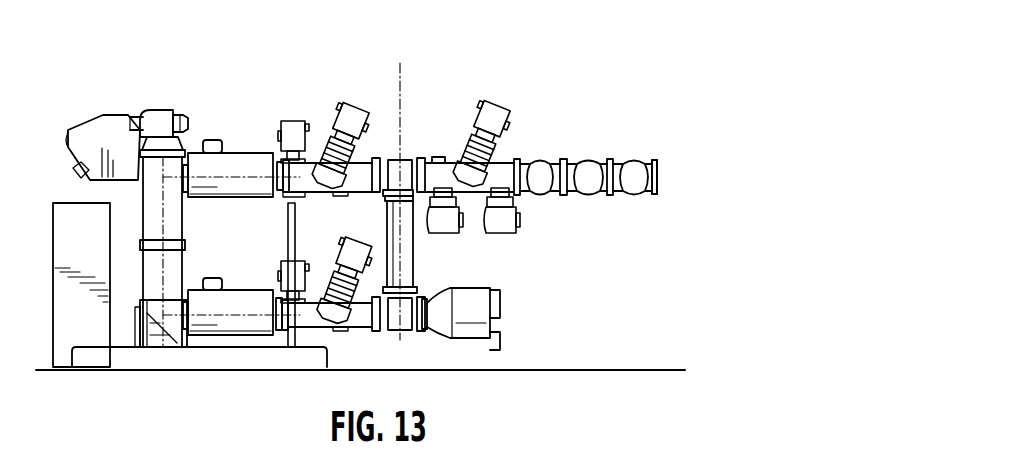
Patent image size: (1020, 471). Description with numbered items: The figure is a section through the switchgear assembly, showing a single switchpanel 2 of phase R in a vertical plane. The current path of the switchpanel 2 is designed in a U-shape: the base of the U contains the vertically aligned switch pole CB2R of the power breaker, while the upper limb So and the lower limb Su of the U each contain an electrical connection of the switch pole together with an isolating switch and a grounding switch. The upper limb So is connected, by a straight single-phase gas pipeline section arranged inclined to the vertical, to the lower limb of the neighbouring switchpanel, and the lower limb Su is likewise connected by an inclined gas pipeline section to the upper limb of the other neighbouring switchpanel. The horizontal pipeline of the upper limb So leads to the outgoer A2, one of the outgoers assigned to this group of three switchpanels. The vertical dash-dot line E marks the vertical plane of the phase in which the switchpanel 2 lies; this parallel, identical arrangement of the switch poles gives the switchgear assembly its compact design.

The switch pole CB2R is at (109, 130).
The upper limb So is at (235, 157).
The lower limb Su is at (237, 335).
The vertical plane / axis E is at (400, 187).
The outgoer A2 is at (676, 187).
The switchpanel 2 is at (595, 291).